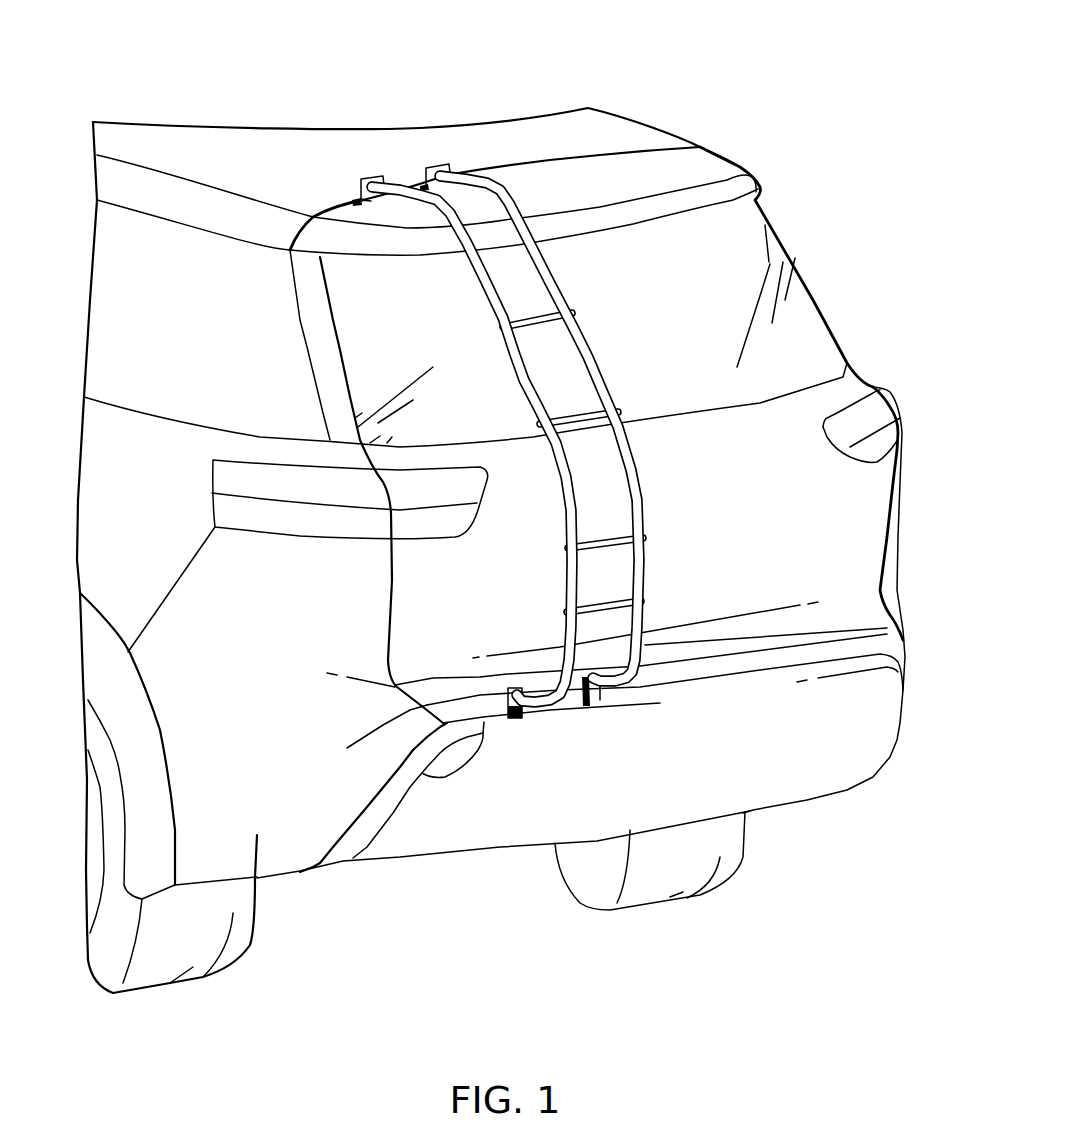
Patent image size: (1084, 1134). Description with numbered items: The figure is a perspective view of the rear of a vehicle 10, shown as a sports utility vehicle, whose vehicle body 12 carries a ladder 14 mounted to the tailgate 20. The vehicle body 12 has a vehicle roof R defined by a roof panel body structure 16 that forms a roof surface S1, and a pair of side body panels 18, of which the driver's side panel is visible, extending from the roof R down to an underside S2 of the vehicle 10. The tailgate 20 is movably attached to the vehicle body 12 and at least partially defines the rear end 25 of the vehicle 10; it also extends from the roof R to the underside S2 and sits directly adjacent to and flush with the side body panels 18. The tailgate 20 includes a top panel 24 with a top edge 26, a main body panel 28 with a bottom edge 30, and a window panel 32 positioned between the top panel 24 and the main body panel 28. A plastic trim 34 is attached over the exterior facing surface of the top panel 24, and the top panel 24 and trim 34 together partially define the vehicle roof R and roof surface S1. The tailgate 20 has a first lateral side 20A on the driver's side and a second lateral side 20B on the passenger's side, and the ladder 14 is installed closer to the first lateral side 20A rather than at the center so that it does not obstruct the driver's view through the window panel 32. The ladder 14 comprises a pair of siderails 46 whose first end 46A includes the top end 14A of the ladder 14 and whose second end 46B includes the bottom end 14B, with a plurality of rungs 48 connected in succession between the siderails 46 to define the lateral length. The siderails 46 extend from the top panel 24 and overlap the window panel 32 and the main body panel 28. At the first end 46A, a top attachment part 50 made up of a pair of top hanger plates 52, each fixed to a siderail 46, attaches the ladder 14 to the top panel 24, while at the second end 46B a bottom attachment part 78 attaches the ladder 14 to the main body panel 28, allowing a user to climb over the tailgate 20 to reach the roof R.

The vehicle 10 is at (501, 504).
The vehicle body 12 is at (163, 116).
The ladder 14 is at (578, 409).
The top end of the ladder 14A is at (378, 100).
The bottom end of the ladder 14B is at (585, 716).
The roof panel body structure 16 is at (233, 150).
The side body panel 18 is at (130, 455).
The tailgate 20 is at (373, 482).
The first lateral side of the tailgate 20A is at (353, 578).
The second lateral side of the tailgate 20B is at (912, 529).
The top panel 24 is at (563, 190).
The rear end of the vehicle 25 is at (917, 464).
The top edge of the tailgate 26 is at (622, 153).
The main body panel 28 is at (440, 600).
The bottom edge of the tailgate 30 is at (422, 773).
The window panel 32 is at (367, 323).
The trim 34 is at (747, 180).
The siderail 46 is at (563, 288).
The first end of the siderails 46A is at (468, 186).
The second end of the siderails 46B is at (525, 707).
The rung 48 is at (543, 320).
The top attachment part 50 is at (490, 438).
The top hanger plate 52 is at (357, 184).
The bottom attachment part 78 is at (586, 677).
The vehicle roof R is at (450, 104).
The roof surface S1 is at (309, 157).
The underside of the vehicle S2 is at (528, 871).